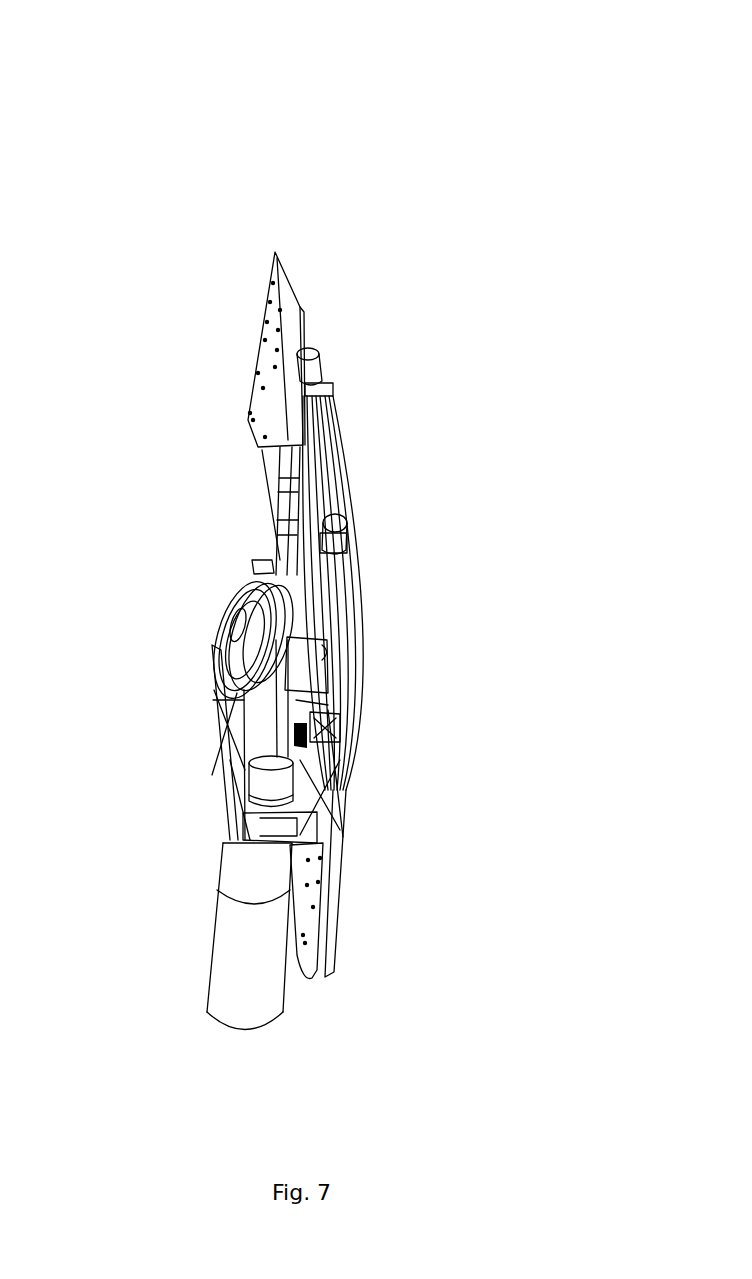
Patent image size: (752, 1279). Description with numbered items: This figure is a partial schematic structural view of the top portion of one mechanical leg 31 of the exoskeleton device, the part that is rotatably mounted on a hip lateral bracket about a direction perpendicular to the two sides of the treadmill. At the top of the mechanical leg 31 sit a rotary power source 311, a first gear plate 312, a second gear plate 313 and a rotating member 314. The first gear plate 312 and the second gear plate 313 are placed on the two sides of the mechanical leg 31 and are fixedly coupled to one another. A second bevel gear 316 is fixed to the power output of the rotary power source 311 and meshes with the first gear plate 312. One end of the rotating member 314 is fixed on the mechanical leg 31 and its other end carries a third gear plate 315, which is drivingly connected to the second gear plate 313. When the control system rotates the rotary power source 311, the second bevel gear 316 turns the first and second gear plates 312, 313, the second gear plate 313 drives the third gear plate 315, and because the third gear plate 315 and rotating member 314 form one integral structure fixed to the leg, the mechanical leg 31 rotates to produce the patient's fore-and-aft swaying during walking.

The mechanical leg 31 is at (182, 134).
The rotary power source 311 is at (253, 970).
The first gear plate 312 is at (362, 620).
The second gear plate 313 is at (246, 580).
The rotating member 314 is at (338, 720).
The third gear plate 315 is at (270, 747).
The second bevel gear 316 is at (218, 690).